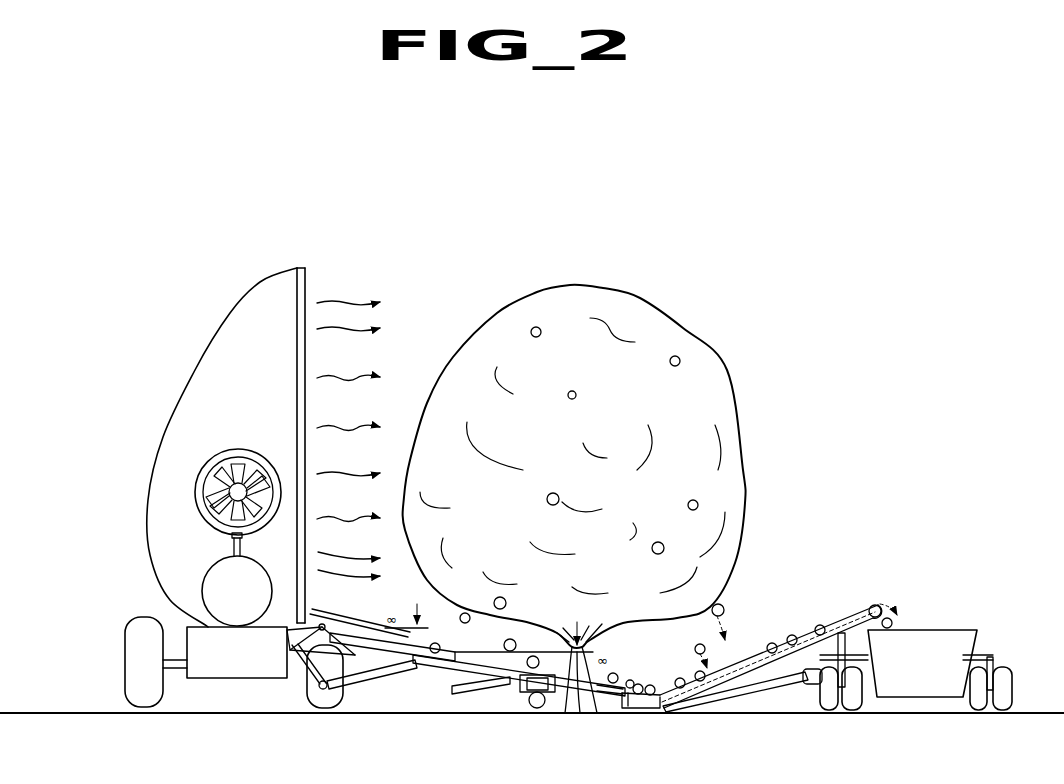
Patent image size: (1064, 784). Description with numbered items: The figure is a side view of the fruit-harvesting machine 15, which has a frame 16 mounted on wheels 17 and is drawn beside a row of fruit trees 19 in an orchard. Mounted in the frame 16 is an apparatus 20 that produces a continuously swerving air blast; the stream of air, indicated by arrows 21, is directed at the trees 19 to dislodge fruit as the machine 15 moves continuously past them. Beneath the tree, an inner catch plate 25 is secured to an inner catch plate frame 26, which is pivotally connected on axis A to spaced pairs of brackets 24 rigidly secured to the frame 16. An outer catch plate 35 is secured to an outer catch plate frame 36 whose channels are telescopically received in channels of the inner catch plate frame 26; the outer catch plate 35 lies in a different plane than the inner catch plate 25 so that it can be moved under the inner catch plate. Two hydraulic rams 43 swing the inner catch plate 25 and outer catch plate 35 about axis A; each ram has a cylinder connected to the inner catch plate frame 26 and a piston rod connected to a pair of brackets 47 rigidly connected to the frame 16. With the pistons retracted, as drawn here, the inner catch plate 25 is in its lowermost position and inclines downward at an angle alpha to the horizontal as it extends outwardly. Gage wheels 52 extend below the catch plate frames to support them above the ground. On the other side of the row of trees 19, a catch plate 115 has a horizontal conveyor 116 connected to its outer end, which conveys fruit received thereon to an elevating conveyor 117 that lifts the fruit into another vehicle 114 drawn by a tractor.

The machine 15 is at (193, 488).
The frame 16 is at (210, 678).
The wheels 17 is at (125, 690).
The trees 19 is at (722, 368).
The apparatus to produce a continuously swerving air blast 20 is at (215, 337).
The arrows 21 is at (356, 331).
The brackets 24 is at (293, 633).
The inner catch plate 25 is at (462, 626).
The inner catch plate frame 26 is at (390, 657).
The outer catch plate 35 is at (505, 667).
The outer catch plate frame 36 is at (440, 667).
The hydraulic rams 43 is at (358, 690).
The brackets 47 is at (292, 668).
The gage wheels 52 is at (534, 705).
The vehicle 114 is at (933, 638).
The catch plate 115 is at (745, 664).
The horizontal conveyor 116 is at (630, 680).
The elevating conveyor 117 is at (808, 640).